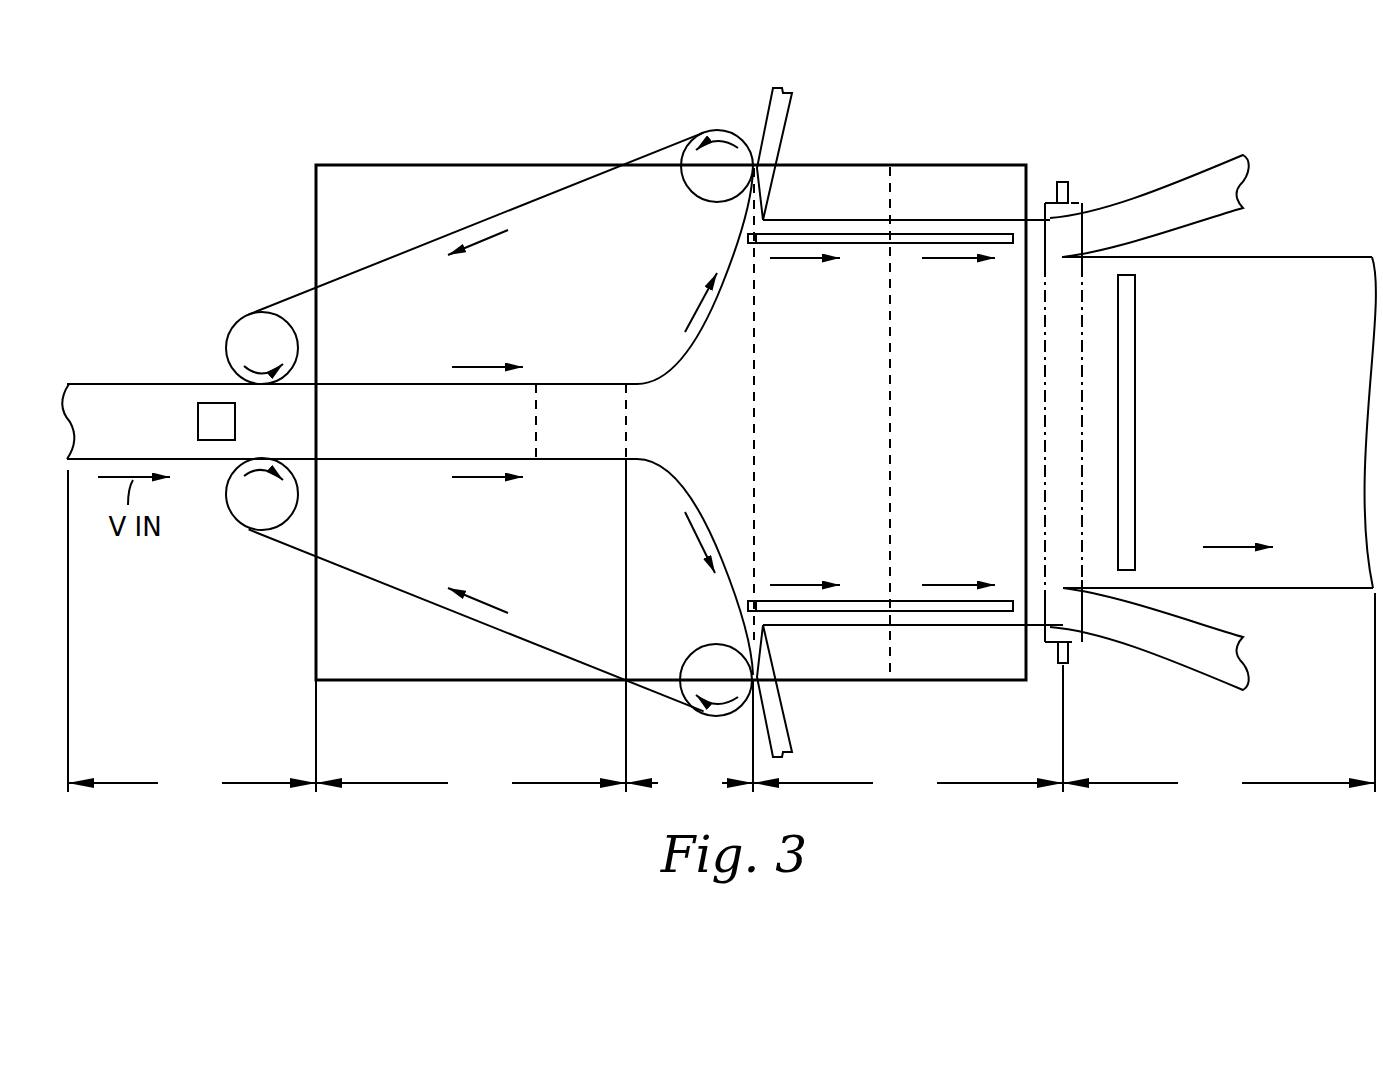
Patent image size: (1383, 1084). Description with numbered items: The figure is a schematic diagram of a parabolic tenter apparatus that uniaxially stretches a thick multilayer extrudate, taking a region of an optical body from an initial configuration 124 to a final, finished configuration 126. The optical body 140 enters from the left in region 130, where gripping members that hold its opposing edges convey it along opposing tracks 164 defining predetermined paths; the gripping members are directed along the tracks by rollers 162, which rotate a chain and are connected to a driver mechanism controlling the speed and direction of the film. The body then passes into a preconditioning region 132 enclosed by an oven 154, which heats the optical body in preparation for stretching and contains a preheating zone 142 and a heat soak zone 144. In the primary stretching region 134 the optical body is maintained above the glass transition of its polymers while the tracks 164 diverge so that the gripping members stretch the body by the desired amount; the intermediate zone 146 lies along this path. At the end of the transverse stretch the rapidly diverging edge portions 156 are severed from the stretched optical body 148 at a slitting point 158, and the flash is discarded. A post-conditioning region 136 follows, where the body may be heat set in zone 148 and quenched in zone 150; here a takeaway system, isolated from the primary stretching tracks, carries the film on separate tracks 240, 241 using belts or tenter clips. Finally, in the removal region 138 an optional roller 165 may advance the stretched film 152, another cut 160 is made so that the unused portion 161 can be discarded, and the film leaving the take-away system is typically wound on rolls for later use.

The initial configuration 124 is at (213, 420).
The final finished configuration 126 is at (1128, 320).
The region 130 is at (192, 634).
The preconditioning region 132 is at (471, 628).
The primary stretching region 134 is at (689, 739).
The post-conditioning region 136 is at (908, 731).
The removal region 138 is at (1219, 695).
The optical body 140 is at (118, 437).
The preheating zone 142 is at (401, 437).
The heat soak zone 144 is at (556, 437).
The web section 146 is at (672, 437).
The stretched optical body 148 is at (799, 437).
The quench zone 150 is at (936, 437).
The stretched film 152 is at (1244, 437).
The oven 154 is at (506, 165).
The rapidly diverging edge portions 156 is at (780, 93).
The slitting point 158 is at (765, 218).
The cut 160 is at (1062, 257).
The unused portion 161 is at (1180, 197).
The rollers 162 is at (246, 327).
The opposing tracks 164 is at (670, 371).
The roller 165 is at (1078, 638).
The track 240 is at (857, 248).
The track 241 is at (864, 600).